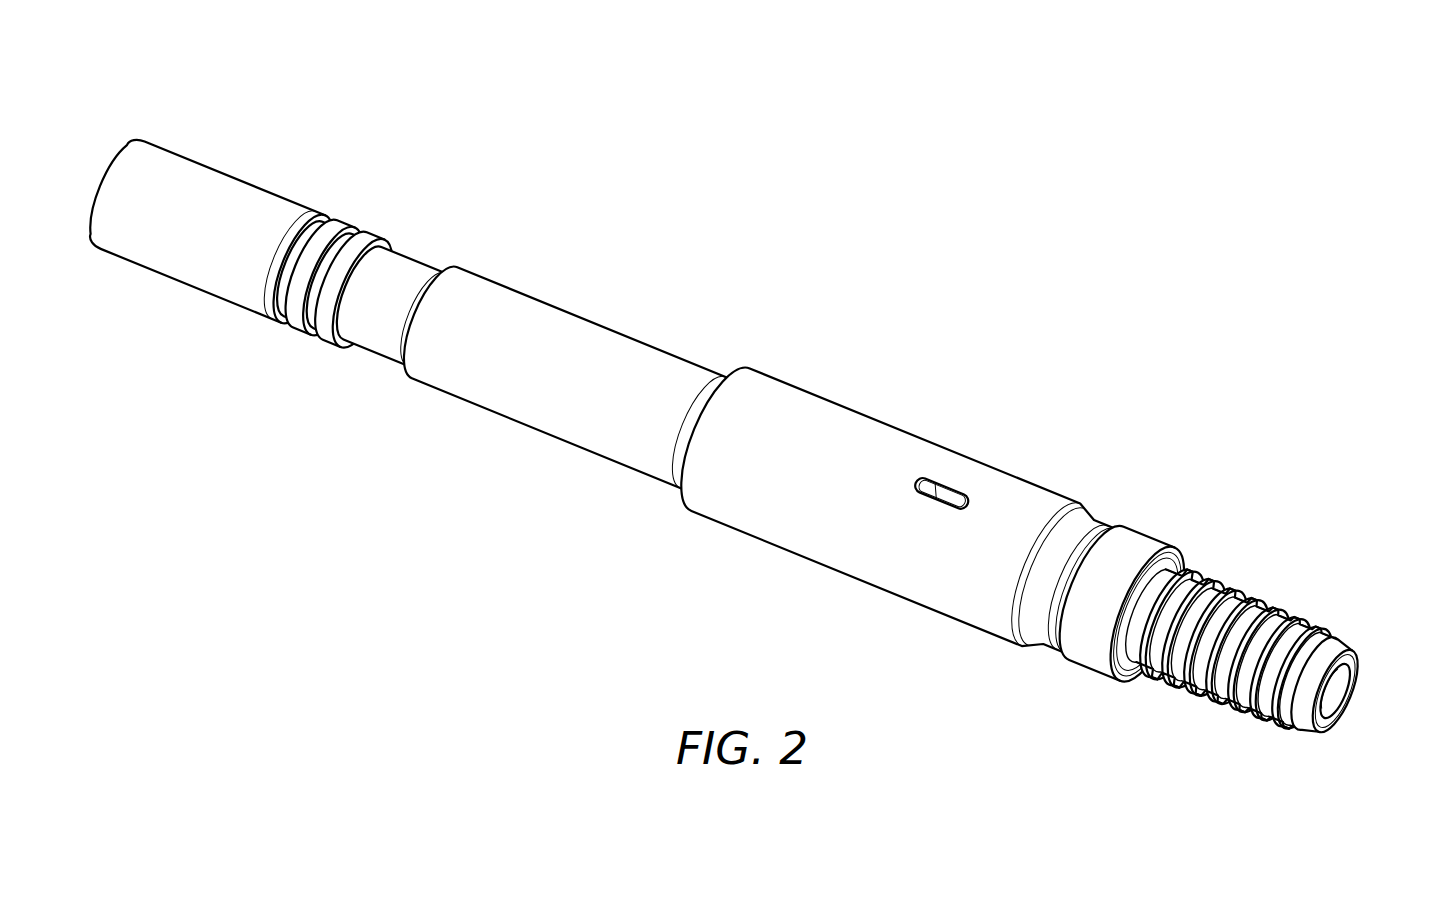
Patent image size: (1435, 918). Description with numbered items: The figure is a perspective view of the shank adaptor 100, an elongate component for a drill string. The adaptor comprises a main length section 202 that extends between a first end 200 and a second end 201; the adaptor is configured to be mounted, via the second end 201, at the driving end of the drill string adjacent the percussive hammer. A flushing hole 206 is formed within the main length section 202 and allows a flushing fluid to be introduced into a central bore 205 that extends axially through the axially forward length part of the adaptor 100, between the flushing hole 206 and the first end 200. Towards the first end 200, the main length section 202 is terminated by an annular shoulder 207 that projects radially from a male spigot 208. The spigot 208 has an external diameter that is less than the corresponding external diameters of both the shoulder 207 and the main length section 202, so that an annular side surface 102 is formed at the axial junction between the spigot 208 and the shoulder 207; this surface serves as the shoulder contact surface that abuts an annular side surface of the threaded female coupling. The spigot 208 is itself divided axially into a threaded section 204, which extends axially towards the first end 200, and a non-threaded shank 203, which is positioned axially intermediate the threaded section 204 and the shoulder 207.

The shank adaptor 100 is at (742, 438).
The annular side surface 102 is at (1178, 557).
The first end 200 is at (1362, 657).
The second end 201 is at (113, 153).
The main length section 202 is at (650, 245).
The non-threaded shank 203 is at (1139, 655).
The threaded section 204 is at (1243, 714).
The central bore 205 is at (1336, 692).
The flushing hole 206 is at (948, 478).
The annular shoulder 207 is at (1141, 535).
The male spigot 208 is at (1269, 650).